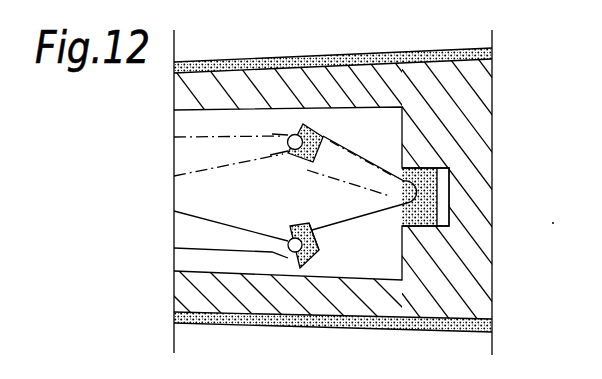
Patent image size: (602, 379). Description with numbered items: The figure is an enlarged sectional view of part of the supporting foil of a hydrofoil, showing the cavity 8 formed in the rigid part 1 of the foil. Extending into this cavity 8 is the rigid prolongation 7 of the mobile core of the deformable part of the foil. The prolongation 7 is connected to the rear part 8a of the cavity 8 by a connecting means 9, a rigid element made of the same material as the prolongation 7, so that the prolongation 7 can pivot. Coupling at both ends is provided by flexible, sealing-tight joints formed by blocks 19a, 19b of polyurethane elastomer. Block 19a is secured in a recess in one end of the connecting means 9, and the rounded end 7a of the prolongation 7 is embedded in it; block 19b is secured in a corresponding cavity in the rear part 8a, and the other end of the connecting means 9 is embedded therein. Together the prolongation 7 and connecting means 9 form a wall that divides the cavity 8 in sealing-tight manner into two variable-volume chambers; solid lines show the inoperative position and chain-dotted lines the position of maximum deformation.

The rigid part 1 is at (281, 330).
The prolongation 7 is at (188, 235).
The rounded end 7a is at (288, 238).
The cavity 8 is at (338, 131).
The rear part of cavity 8a is at (402, 142).
The connecting means 9 is at (344, 221).
The block 19a is at (314, 252).
The block 19b is at (434, 181).